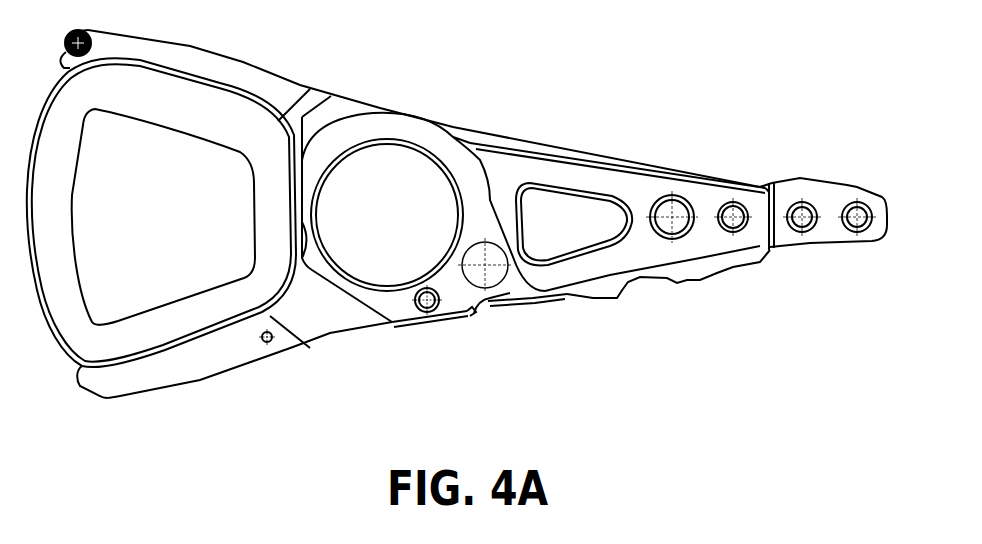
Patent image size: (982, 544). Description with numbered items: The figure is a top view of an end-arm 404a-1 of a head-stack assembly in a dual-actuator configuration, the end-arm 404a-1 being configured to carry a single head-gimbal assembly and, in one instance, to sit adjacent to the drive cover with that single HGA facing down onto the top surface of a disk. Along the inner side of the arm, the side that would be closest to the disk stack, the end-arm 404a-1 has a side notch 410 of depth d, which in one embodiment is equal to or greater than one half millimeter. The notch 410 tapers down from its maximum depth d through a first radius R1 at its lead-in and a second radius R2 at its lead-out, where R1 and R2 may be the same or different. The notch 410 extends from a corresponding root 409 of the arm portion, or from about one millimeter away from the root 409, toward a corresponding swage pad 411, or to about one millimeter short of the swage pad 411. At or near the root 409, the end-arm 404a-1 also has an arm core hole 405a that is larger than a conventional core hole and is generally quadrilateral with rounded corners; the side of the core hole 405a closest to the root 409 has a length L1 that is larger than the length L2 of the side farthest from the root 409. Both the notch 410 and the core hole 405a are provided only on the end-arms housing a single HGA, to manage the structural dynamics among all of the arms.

The root 409 is at (452, 126).
The first radius R1 is at (474, 142).
The side notch 410 is at (613, 163).
The depth d is at (571, 184).
The second radius R2 is at (731, 185).
The swage pad 411 is at (784, 194).
The length of side closest to root L1 is at (530, 190).
The length of side farthest from root L2 is at (604, 199).
The arm core hole 405a is at (572, 232).
The end-arm 404a-1 is at (697, 284).